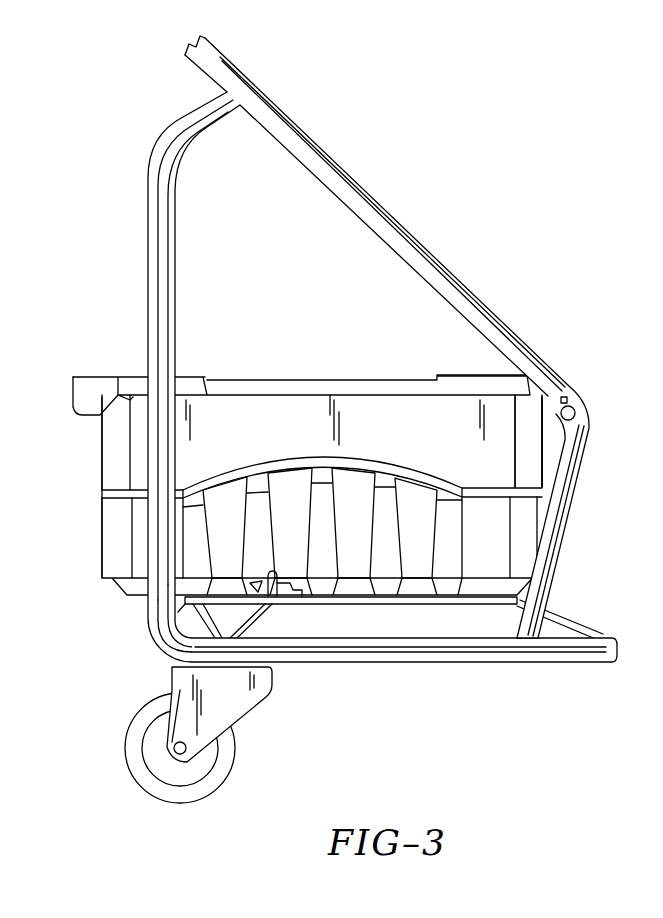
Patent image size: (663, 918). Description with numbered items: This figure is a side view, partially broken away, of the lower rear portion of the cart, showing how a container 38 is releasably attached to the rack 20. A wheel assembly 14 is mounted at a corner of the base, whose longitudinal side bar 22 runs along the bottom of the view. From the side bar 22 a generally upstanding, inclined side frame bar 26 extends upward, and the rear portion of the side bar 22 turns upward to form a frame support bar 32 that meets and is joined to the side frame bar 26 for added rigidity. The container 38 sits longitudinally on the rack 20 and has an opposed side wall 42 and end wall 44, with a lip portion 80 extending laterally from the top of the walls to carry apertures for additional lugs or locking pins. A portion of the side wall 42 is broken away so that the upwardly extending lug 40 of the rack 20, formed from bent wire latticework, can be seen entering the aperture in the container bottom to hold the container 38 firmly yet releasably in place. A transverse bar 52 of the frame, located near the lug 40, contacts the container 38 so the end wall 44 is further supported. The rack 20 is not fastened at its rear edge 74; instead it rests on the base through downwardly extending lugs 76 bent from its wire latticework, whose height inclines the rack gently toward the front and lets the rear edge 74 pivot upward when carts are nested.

The wheel assembly 14 is at (136, 795).
The rack structure 20 is at (560, 613).
The longitudinal side bar 22 is at (453, 648).
The side frame bar 26 is at (423, 268).
The frame support bar 32 is at (162, 270).
The container 38 is at (292, 368).
The lug 40 is at (297, 597).
The side wall 42 is at (388, 397).
The end wall 44 is at (102, 452).
The transverse bar 52 is at (583, 407).
The rear edge 74 is at (170, 616).
The downwardly extending lug 76 is at (258, 614).
The lip portion 80 is at (87, 390).